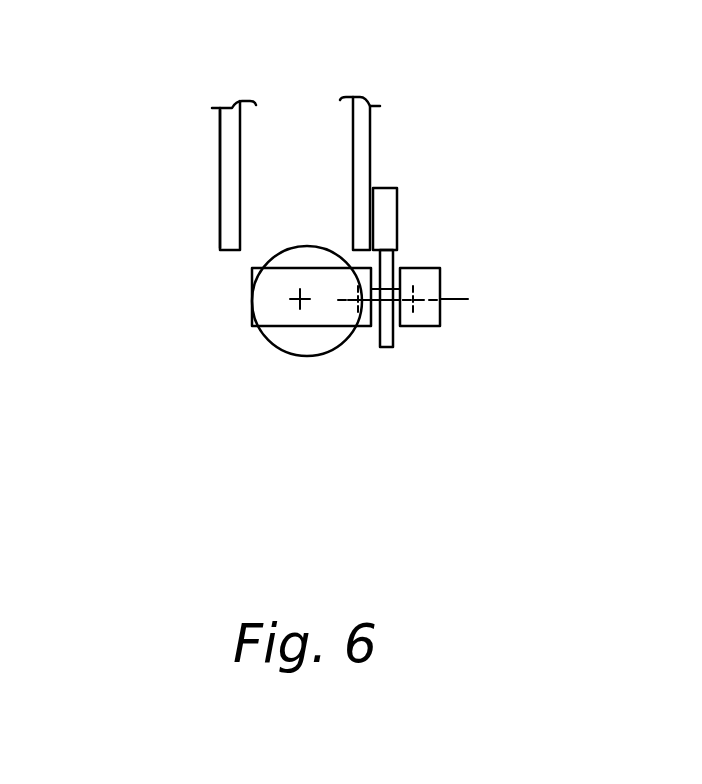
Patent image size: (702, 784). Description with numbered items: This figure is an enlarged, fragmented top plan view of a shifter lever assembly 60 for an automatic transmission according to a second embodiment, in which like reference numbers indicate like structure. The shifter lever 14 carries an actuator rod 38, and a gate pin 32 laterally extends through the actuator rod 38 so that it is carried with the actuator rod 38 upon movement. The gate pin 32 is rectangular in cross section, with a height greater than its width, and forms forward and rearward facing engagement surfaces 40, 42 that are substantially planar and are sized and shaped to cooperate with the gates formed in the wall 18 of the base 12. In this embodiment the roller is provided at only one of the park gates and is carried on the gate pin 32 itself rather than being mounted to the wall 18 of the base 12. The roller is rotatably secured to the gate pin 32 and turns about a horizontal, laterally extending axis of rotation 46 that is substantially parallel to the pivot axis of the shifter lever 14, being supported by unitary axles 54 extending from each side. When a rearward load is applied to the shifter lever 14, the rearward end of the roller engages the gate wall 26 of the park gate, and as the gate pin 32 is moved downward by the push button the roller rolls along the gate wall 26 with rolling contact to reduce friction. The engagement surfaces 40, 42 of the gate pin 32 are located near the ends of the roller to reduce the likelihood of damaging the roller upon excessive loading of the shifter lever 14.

The base 12 is at (240, 137).
The wall 18 is at (220, 137).
The gate wall 26 is at (360, 252).
The shifter lever 14 is at (288, 357).
The actuator rod 38 is at (262, 343).
The forward engagement surface 40 is at (407, 329).
The rearward engagement surface 42 is at (440, 268).
The gate pin 32 is at (425, 328).
The axis of rotation 46 is at (468, 299).
The axle 54 is at (413, 289).
The shifter lever assembly 60 is at (348, 476).